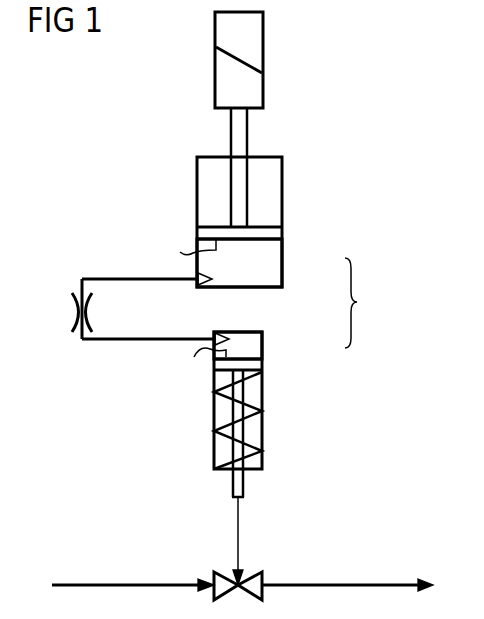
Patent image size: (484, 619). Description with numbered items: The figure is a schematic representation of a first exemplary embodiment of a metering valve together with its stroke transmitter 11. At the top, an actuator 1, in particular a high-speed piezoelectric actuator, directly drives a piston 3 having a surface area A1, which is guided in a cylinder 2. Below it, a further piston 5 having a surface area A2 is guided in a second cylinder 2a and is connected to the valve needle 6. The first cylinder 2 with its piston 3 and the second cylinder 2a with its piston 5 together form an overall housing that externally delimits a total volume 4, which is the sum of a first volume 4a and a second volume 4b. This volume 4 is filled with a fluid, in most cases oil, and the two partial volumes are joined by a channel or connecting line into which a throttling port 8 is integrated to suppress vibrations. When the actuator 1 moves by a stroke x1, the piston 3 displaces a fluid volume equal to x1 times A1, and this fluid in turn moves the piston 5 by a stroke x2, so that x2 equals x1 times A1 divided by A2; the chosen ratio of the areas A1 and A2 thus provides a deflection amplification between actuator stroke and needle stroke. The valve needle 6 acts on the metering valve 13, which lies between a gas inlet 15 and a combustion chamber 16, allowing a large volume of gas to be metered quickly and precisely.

The actuator 1 is at (253, 45).
The cylinder 2 is at (283, 182).
The second cylinder 2a is at (263, 430).
The piston 3 is at (272, 232).
The volume 4 is at (361, 303).
The first volume 4a is at (272, 260).
The second volume 4b is at (255, 343).
The further piston 5 is at (255, 365).
The valve needle 6 is at (238, 528).
The throttling port 8 is at (78, 311).
The stroke transmitter 11 is at (387, 222).
The metering valve 13 is at (222, 572).
The gas inlet 15 is at (120, 585).
The combustion chamber 16 is at (346, 585).
The surface area of the first piston A1 is at (183, 255).
The surface area of the second piston A2 is at (193, 362).